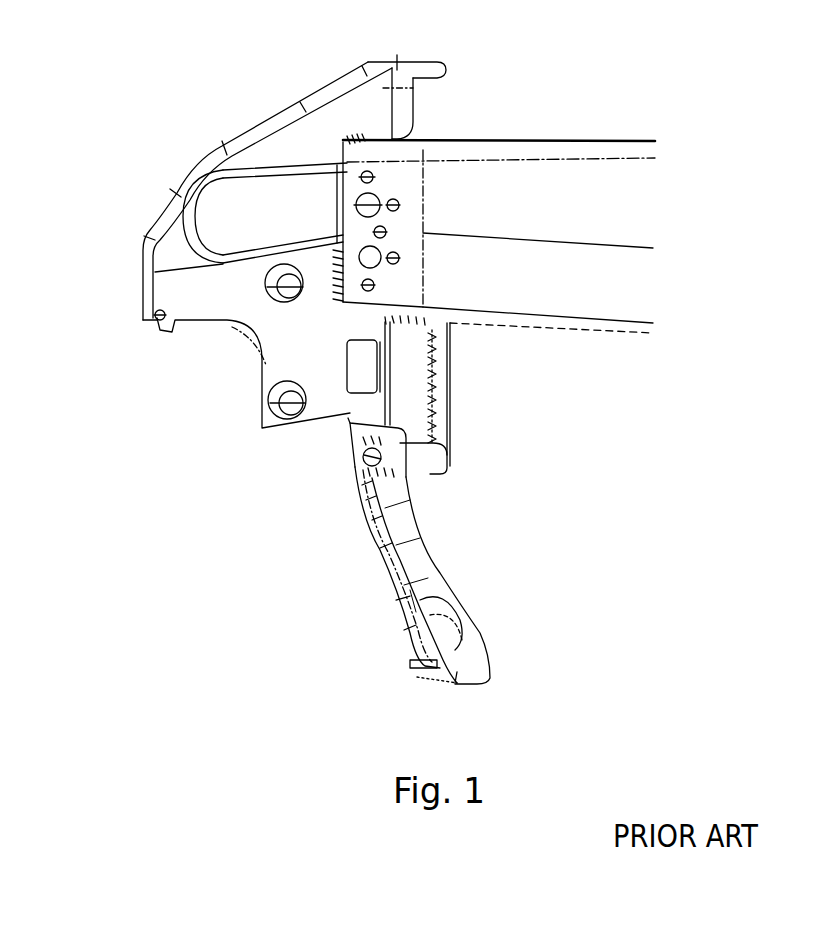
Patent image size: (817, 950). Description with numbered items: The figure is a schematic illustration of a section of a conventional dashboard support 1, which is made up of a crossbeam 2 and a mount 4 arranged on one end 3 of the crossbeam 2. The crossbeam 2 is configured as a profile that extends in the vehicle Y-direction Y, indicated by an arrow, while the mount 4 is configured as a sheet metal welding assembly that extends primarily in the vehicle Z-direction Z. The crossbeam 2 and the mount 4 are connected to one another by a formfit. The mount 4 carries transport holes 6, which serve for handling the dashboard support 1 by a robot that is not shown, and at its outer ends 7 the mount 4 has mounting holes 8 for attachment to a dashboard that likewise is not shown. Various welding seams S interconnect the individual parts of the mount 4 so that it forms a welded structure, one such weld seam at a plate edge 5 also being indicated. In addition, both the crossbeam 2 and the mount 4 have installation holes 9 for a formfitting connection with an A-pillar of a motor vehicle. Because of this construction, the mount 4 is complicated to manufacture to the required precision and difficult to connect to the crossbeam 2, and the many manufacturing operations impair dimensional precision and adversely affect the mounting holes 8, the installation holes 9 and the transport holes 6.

The dashboard support 1 is at (178, 130).
The crossbeam 2 is at (617, 200).
The end 3 is at (440, 130).
The mount 4 is at (220, 310).
The weld seam at plate edge 5 is at (343, 275).
The transport holes 6 is at (287, 407).
The outer ends 7 is at (443, 55).
The mounting holes 8 is at (398, 62).
The installation holes 9 is at (377, 260).
The welding seams S is at (345, 297).
The vehicle Y-direction Y is at (685, 293).
The vehicle Z-direction Z is at (297, 498).